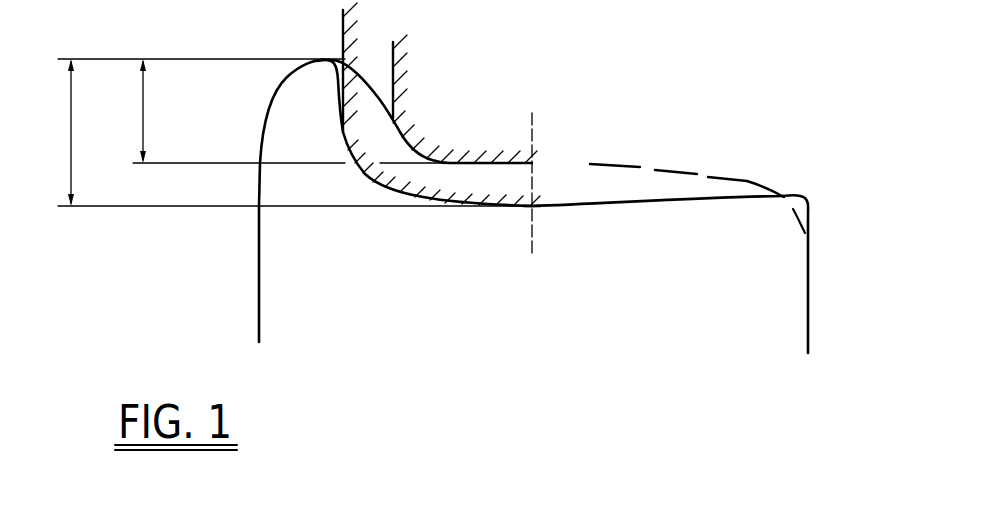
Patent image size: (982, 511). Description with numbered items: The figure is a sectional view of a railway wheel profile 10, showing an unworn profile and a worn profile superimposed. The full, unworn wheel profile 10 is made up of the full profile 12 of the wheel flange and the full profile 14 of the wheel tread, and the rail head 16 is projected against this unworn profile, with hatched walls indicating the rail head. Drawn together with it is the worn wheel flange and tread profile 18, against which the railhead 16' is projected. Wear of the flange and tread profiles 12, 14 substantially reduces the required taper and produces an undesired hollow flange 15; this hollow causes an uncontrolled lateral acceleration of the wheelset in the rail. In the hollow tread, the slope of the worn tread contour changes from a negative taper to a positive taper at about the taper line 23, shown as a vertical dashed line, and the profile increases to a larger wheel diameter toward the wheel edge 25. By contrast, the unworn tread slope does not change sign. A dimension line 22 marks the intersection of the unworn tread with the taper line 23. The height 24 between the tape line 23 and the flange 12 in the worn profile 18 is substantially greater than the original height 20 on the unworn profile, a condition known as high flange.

The wheel profile 10 is at (265, 131).
The full profile of the wheel flange 12 is at (340, 58).
The full profile of the wheel tread 14 is at (612, 168).
The hollow flange 15 is at (588, 207).
The rail head 16 is at (437, 99).
The railhead 16' is at (379, 66).
The worn wheel flange and tread profile 18 is at (423, 198).
The original height 20 is at (291, 111).
The center line 22 is at (536, 160).
The taper line 23 is at (535, 200).
The height 24 is at (295, 132).
The wheel edge 25 is at (772, 196).